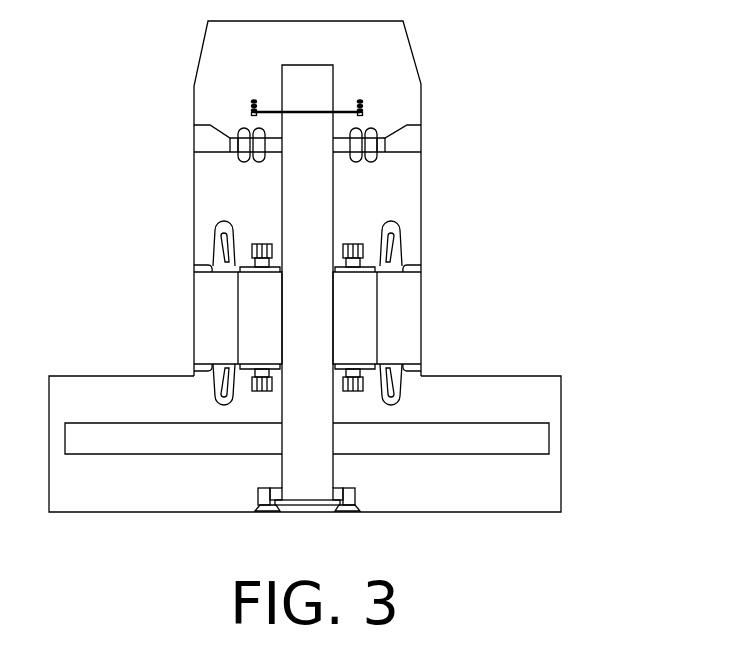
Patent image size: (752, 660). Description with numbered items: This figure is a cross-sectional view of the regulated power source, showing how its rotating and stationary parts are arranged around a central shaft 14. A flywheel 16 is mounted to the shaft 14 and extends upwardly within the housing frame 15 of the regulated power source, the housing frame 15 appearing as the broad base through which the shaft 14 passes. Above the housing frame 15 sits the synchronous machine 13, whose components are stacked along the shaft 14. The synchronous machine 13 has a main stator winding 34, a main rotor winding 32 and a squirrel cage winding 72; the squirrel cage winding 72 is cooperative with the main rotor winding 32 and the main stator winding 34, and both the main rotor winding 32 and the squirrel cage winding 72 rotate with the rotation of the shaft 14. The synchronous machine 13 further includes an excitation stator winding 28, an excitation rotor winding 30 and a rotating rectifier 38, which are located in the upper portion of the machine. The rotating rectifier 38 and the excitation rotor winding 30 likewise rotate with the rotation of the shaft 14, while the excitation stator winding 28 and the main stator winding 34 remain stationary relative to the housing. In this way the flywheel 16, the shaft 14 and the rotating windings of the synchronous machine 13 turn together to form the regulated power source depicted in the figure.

The synchronous machine 13 is at (448, 217).
The shaft 14 is at (325, 465).
The housing frame 15 is at (519, 376).
The flywheel 16 is at (550, 432).
The excitation stator winding 28 is at (235, 135).
The excitation rotor winding 30 is at (260, 162).
The main rotor winding 32 is at (357, 240).
The main stator winding 34 is at (403, 385).
The rotating rectifier 38 is at (356, 100).
The squirrel cage winding 72 is at (360, 320).